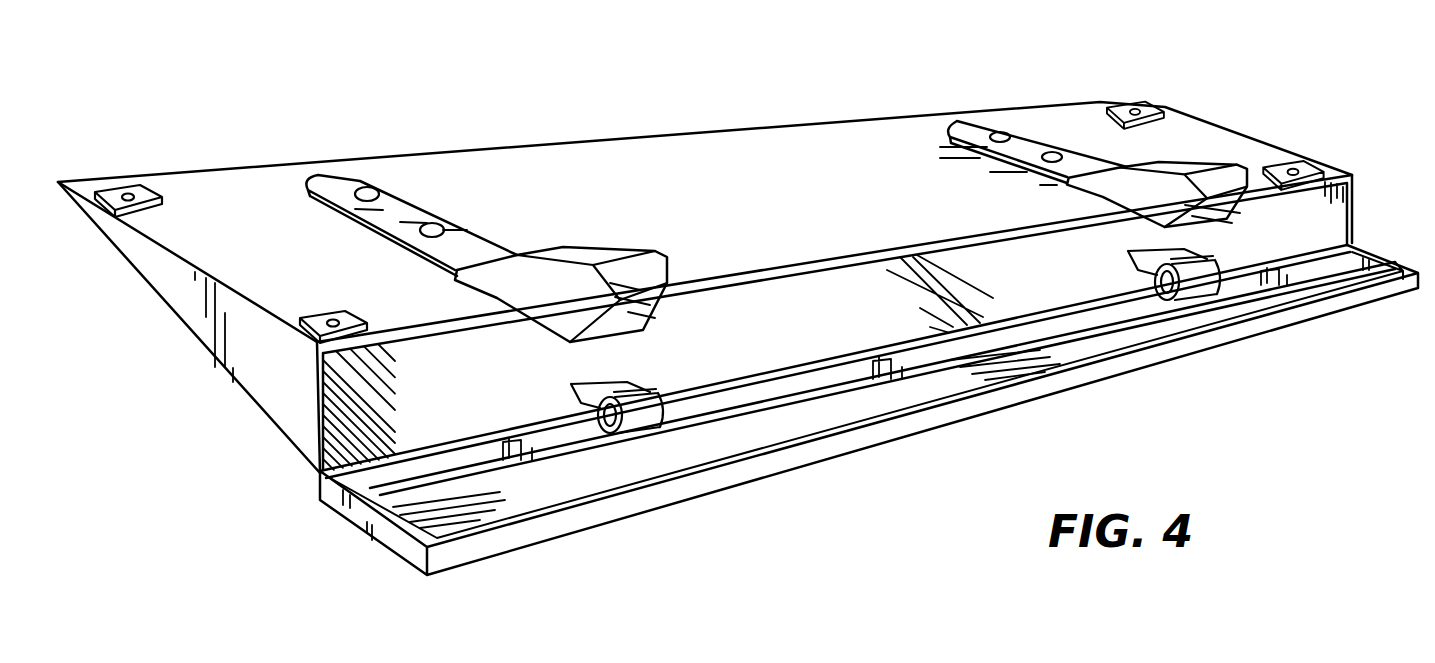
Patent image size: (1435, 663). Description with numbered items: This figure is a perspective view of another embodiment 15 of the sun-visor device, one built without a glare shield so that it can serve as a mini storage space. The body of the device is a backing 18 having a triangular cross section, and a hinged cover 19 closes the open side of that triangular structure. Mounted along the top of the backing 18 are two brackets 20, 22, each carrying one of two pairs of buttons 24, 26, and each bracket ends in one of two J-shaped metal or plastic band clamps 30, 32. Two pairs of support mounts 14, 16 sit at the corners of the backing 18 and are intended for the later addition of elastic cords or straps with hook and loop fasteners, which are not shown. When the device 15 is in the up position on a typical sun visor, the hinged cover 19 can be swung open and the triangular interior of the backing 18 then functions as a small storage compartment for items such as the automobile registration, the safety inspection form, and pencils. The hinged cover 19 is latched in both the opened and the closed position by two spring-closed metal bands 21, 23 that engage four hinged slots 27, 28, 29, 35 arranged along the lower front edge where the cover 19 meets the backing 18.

The support mount 14 is at (317, 314).
The embodiment 15 is at (412, 84).
The support mount 16 is at (1290, 162).
The triangular cross section backing 18 is at (215, 347).
The hinged cover 19 is at (928, 432).
The bracket 20 is at (411, 240).
The spring-closed metal band 21 is at (613, 388).
The bracket 22 is at (1075, 188).
The spring-closed metal band 23 is at (1169, 263).
The buttons 24 is at (432, 223).
The buttons 26 is at (1052, 151).
The hinged slot 27 is at (571, 388).
The hinged slot 28 is at (625, 433).
The hinged slot 29 is at (1200, 304).
The J-shaped band clamp 30 is at (656, 252).
The J-shaped band clamp 32 is at (1013, 126).
The hinged slot 35 is at (1150, 272).